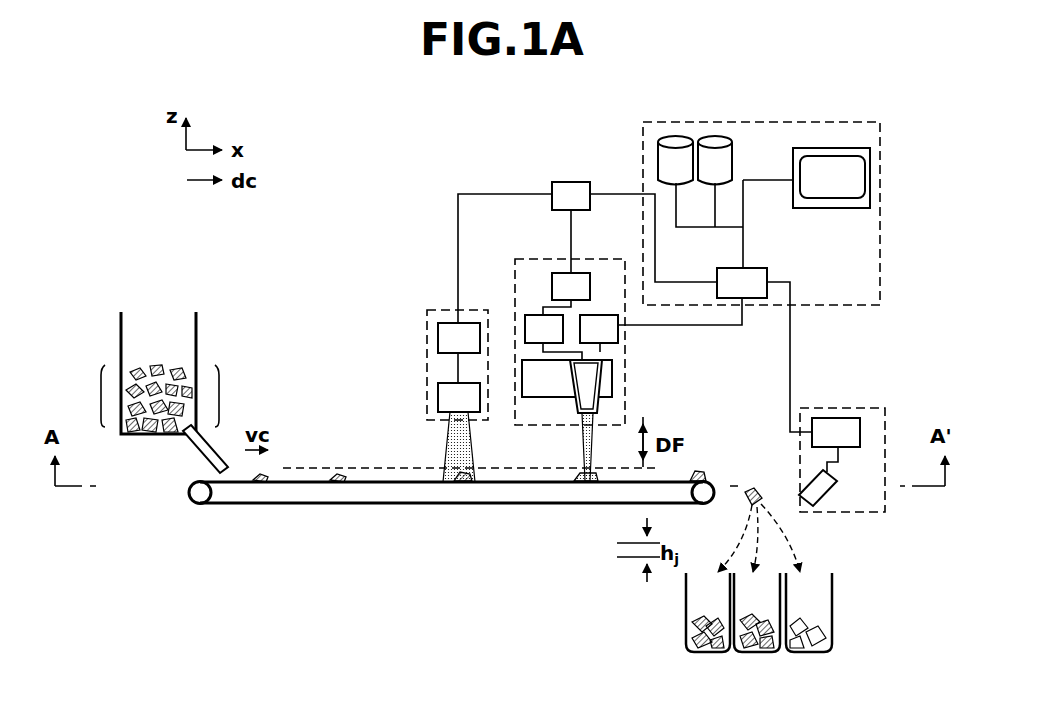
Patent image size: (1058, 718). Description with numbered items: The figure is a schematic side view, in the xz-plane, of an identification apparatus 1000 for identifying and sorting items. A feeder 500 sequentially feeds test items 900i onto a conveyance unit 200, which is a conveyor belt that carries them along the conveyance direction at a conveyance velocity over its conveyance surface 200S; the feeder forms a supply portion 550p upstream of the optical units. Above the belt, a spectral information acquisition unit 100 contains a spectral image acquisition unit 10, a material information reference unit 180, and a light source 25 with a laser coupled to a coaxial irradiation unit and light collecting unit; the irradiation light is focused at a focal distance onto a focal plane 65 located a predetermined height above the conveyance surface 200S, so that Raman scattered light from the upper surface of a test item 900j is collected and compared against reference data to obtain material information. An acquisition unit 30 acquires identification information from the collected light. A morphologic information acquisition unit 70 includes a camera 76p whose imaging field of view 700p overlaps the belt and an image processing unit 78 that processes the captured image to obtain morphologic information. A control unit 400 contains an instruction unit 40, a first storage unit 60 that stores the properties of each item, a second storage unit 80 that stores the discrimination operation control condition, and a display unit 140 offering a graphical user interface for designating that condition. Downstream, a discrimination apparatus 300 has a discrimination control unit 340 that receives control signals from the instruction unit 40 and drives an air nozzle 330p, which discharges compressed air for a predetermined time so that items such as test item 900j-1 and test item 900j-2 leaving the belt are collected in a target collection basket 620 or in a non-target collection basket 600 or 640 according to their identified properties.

The identification apparatus 1000 is at (132, 104).
The test item 900i is at (101, 395).
The feeder 500 is at (160, 365).
The conveyance unit 200 is at (190, 481).
The conveyance surface 200S is at (155, 481).
The supply portion 550p is at (218, 470).
The focal plane 65 is at (524, 478).
The test item 900j is at (560, 485).
The imaging field of view 700p is at (452, 434).
The camera 76p is at (438, 400).
The image processing unit 78 is at (438, 338).
The morphologic information acquisition unit 70 is at (438, 310).
The acquisition unit 30 is at (572, 182).
The spectral information acquisition unit 100 is at (536, 259).
The material information reference unit 180 is at (576, 273).
The spectral image acquisition unit 10 is at (540, 315).
The light source 25 is at (618, 330).
The first storage unit 60 is at (676, 135).
The second storage unit 80 is at (716, 135).
The control unit 400 is at (780, 122).
The instruction unit 40 is at (748, 268).
The display unit 140 is at (842, 208).
The discrimination apparatus 300 is at (866, 408).
The discrimination control unit 340 is at (832, 418).
The air nozzle 330p is at (828, 500).
The test item 900j-1 is at (748, 450).
The test item 900j-2 is at (762, 496).
The non-target collection basket 640 is at (695, 600).
The non-target collection basket 600 is at (827, 608).
The target collection basket 620 is at (768, 608).